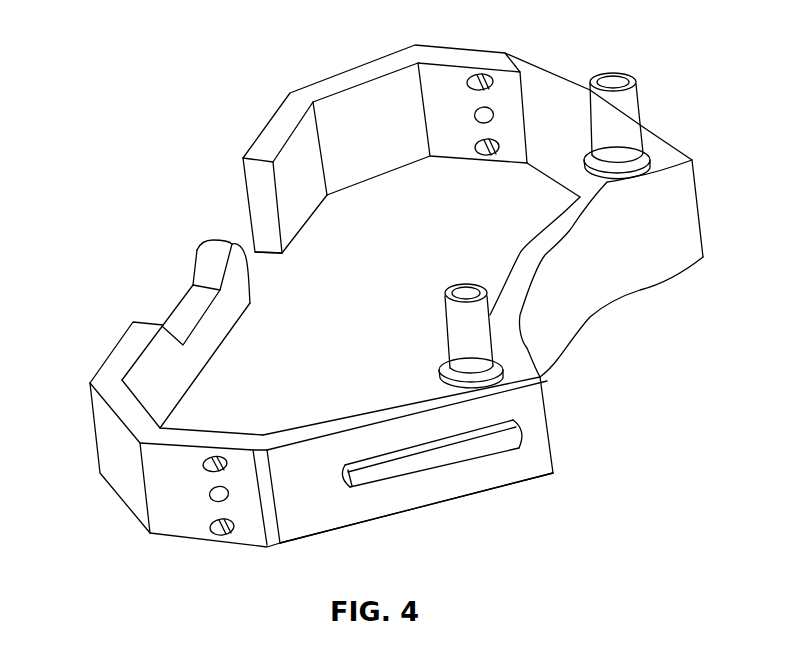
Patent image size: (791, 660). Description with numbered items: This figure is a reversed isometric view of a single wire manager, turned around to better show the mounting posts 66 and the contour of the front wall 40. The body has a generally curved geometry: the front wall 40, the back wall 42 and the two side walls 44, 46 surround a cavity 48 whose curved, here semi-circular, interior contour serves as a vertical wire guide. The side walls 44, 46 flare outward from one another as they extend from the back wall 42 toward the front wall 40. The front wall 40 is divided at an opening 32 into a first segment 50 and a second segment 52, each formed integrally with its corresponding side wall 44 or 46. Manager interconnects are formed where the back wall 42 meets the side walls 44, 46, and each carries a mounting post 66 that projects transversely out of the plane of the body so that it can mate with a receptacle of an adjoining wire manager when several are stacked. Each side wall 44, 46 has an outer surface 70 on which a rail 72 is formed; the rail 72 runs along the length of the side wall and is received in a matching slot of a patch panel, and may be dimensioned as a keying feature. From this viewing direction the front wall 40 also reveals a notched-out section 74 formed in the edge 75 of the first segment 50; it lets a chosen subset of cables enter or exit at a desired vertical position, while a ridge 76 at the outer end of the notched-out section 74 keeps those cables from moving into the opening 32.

The opening 32 is at (241, 219).
The front wall 40 is at (95, 372).
The back wall 42 is at (517, 267).
The side wall 44 is at (543, 66).
The side wall 46 is at (397, 410).
The cavity 48 is at (496, 213).
The first segment 50 is at (270, 313).
The second segment 52 is at (432, 168).
The mounting post 66 is at (627, 112).
The outer surface 70 is at (305, 530).
The rail 72 is at (443, 467).
The notched-out section 74 is at (163, 311).
The edge 75 is at (128, 340).
The ridge 76 is at (207, 257).